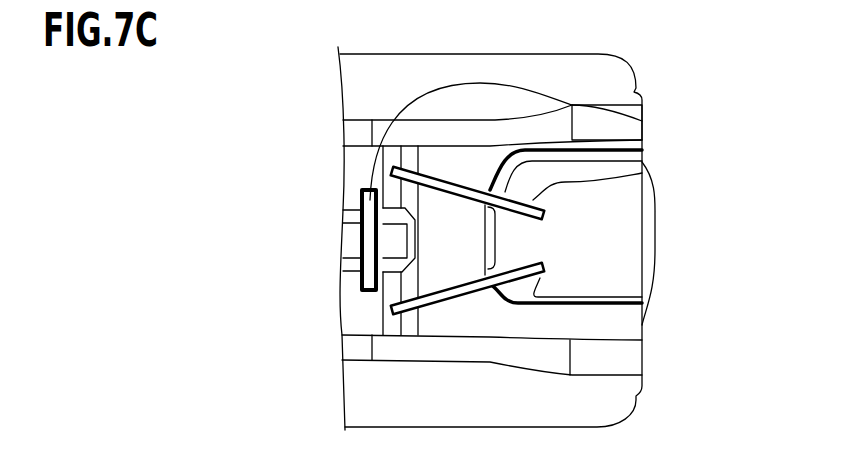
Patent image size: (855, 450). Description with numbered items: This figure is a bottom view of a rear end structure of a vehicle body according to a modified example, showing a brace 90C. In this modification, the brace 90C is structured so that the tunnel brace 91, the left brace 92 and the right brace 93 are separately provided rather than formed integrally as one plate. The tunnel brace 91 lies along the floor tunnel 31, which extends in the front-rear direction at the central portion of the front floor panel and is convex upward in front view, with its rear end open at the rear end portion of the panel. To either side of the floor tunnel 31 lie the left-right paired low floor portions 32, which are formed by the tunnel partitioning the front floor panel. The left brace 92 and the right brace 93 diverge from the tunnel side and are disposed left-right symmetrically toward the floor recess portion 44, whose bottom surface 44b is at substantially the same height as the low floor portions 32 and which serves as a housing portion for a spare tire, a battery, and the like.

The floor tunnel 31 is at (354, 241).
The low floor portions 32 is at (363, 180).
The floor recess portion 44 is at (623, 234).
The bottom surface 44b is at (704, 243).
The brace 90C is at (589, 208).
The tunnel brace 91 is at (642, 121).
The left brace 92 is at (642, 173).
The right brace 93 is at (545, 267).